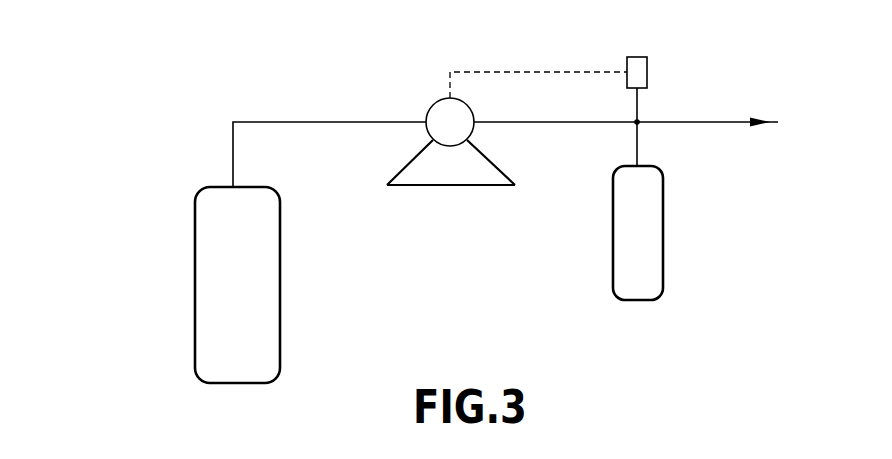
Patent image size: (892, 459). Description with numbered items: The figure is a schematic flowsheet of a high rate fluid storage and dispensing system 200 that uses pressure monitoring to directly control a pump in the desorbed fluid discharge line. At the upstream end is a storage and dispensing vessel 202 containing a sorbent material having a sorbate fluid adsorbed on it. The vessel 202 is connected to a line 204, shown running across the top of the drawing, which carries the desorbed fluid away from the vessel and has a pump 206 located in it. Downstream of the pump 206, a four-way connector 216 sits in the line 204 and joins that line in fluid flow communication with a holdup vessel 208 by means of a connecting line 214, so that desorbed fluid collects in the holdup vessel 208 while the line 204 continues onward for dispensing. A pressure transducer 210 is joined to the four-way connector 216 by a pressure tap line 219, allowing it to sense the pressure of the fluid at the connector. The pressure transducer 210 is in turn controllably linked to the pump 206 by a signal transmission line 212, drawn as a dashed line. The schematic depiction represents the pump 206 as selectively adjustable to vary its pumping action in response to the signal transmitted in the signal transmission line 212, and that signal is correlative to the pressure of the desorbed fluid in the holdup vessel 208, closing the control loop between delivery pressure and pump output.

The fluid delivery system 200 is at (124, 92).
The storage and dispensing vessel 202 is at (195, 328).
The line 204 is at (322, 121).
The pump 206 is at (433, 187).
The holdup vessel 208 is at (664, 255).
The pressure transducer 210 is at (637, 57).
The signal transmission line 212 is at (546, 72).
The connecting line 214 is at (640, 155).
The four-way connector 216 is at (639, 119).
The pressure tap line 219 is at (634, 115).